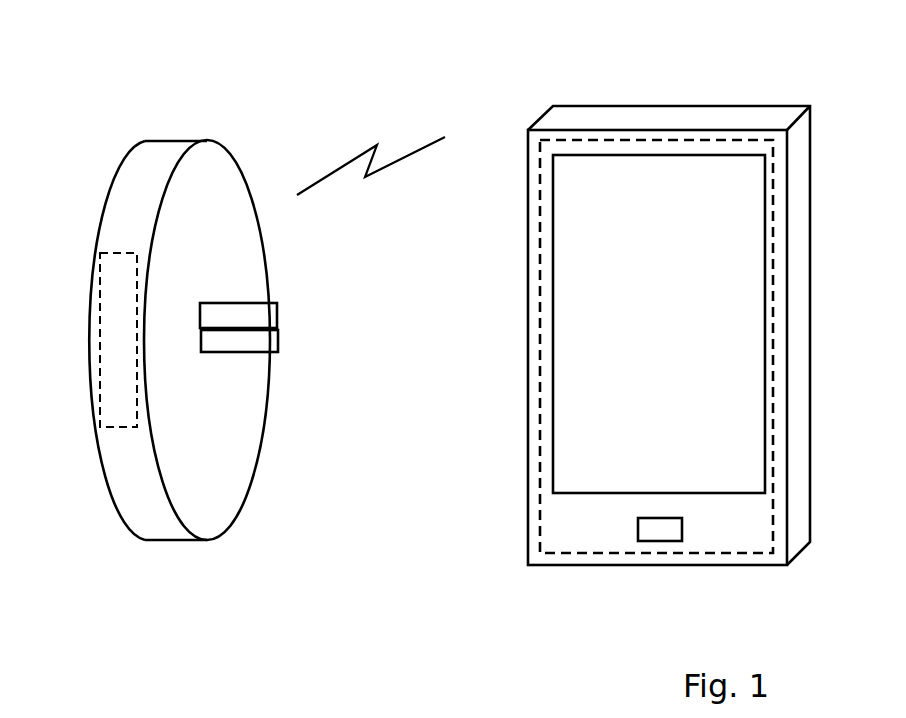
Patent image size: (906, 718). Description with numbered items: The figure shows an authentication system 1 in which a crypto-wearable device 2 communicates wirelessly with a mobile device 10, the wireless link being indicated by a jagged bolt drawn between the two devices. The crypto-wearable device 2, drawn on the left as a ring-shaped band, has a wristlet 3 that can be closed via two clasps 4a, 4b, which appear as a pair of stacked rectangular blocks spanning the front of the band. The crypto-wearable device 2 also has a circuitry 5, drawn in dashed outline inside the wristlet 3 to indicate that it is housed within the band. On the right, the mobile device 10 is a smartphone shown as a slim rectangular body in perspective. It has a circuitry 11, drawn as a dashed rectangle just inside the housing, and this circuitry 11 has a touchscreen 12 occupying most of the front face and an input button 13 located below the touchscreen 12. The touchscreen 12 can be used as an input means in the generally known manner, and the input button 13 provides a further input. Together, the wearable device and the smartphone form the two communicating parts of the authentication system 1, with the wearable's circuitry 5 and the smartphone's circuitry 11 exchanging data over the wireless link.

The authentication system 1 is at (288, 29).
The crypto-wearable device 2 is at (106, 122).
The wristlet 3 is at (97, 213).
The clasp 4a is at (277, 313).
The clasp 4b is at (278, 340).
The circuitry 5 is at (98, 347).
The mobile device 10 is at (607, 82).
The circuitry 11 is at (540, 248).
The touchscreen 12 is at (553, 337).
The input button 13 is at (650, 528).